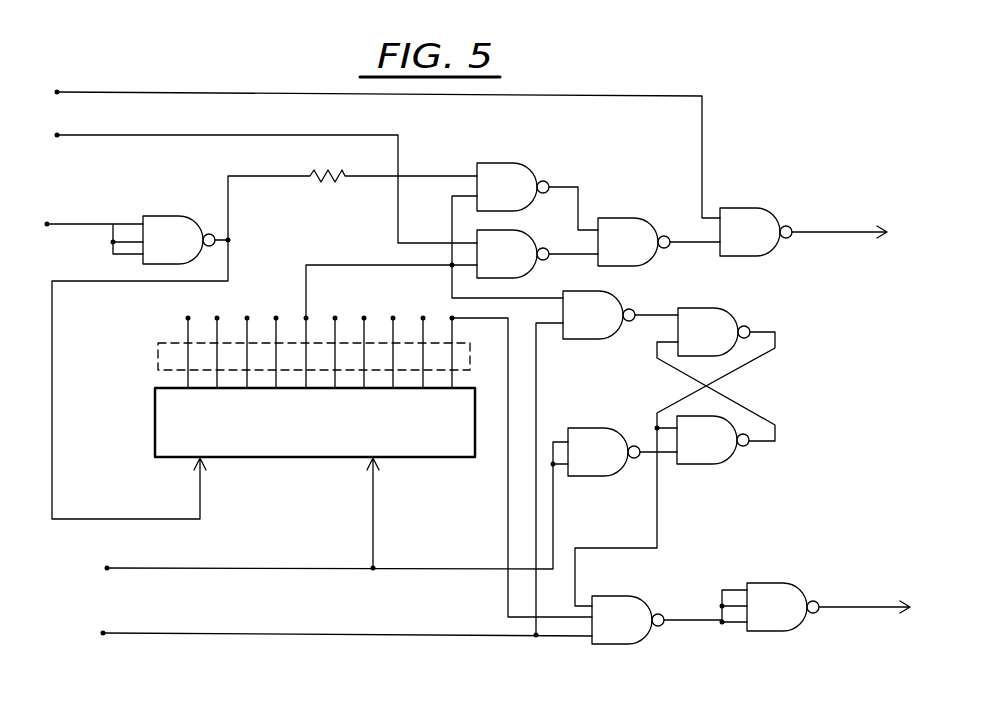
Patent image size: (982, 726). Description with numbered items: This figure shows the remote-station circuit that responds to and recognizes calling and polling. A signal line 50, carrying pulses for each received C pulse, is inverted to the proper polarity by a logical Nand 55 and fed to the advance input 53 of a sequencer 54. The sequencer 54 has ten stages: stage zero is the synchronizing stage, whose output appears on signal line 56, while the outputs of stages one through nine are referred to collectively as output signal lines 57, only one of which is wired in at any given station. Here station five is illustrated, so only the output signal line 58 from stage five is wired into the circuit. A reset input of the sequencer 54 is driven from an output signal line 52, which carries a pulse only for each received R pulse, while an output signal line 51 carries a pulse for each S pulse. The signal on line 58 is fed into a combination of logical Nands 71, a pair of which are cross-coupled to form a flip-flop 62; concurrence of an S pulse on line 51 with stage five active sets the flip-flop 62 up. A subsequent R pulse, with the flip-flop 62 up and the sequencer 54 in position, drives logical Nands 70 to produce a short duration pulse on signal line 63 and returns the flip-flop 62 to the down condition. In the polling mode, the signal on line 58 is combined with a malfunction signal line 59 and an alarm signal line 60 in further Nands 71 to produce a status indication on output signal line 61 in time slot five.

The signal line 50 is at (73, 222).
The output signal line 51 is at (140, 633).
The output signal line 52 is at (153, 568).
The advance input 53 is at (203, 495).
The sequencer 54 is at (322, 460).
The logical Nand 55 is at (168, 217).
The signal line 56 is at (508, 516).
The output signal lines 57 is at (158, 350).
The output signal line 58 is at (326, 264).
The malfunction signal line 59 is at (656, 96).
The alarm signal line 60 is at (178, 140).
The output signal line 61 is at (838, 230).
The flip-flop 62 is at (730, 390).
The signal line 63 is at (859, 605).
The logical Nand 70 is at (630, 645).
The logical Nand 71 is at (526, 165).